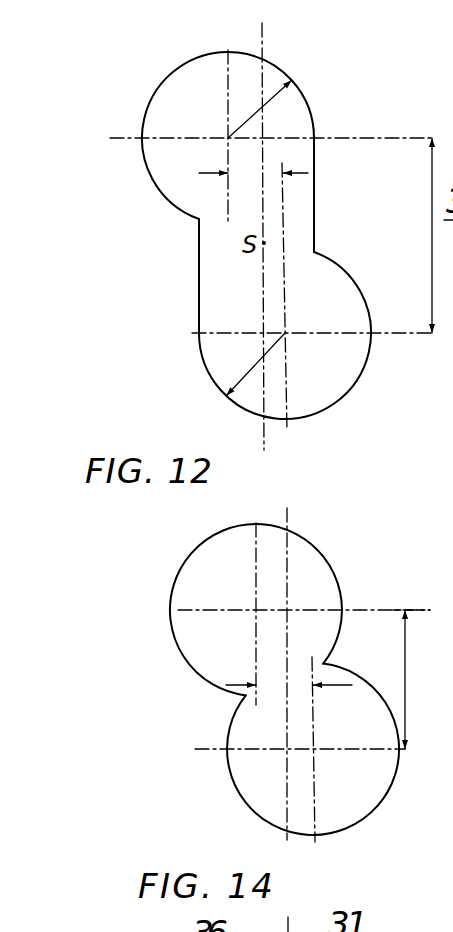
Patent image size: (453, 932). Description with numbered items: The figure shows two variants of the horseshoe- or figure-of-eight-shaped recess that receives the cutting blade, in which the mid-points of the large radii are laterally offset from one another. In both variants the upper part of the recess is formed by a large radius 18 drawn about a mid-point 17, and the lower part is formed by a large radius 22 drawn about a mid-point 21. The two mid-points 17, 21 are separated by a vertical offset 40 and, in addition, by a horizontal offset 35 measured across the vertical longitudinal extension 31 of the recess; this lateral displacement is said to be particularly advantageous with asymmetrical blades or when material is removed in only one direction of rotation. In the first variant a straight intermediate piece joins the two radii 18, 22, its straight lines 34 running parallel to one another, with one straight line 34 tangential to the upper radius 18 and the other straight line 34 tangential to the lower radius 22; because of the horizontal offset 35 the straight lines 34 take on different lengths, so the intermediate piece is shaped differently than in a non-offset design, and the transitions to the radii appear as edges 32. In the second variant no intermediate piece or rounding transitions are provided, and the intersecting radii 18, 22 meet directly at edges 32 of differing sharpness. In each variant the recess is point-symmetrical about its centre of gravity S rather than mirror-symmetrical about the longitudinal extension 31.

In FIG. 12, the mid-point 17 is at (228, 138).
In FIG. 14, the mid-point 17 is at (256, 610).
In FIG. 12, the radius 18 is at (263, 107).
In FIG. 12, the mid-point 21 is at (285, 333).
In FIG. 14, the mid-point 21 is at (311, 749).
In FIG. 12, the radius 22 is at (248, 373).
In FIG. 12, the longitudinal extension 31 is at (262, 42).
In FIG. 14, the longitudinal extension 31 is at (287, 514).
In FIG. 12, the edge 32 is at (199, 219).
In FIG. 14, the edge 32 is at (323, 664).
In FIG. 12, the straight line 34 is at (199, 267).
In FIG. 12, the horizontal offset 35 is at (149, 160).
In FIG. 14, the horizontal offset 35 is at (181, 650).
In FIG. 12, the vertical offset 40 is at (430, 200).
In FIG. 14, the vertical offset 40 is at (405, 651).